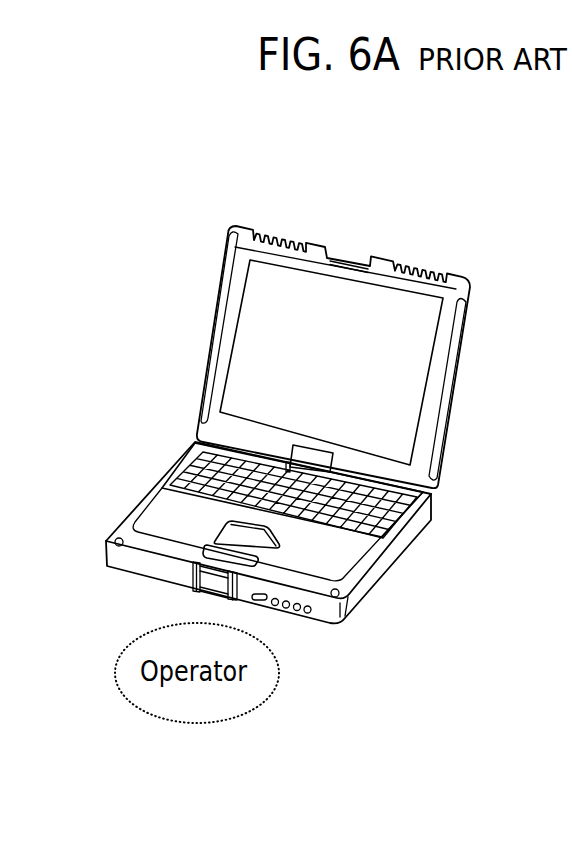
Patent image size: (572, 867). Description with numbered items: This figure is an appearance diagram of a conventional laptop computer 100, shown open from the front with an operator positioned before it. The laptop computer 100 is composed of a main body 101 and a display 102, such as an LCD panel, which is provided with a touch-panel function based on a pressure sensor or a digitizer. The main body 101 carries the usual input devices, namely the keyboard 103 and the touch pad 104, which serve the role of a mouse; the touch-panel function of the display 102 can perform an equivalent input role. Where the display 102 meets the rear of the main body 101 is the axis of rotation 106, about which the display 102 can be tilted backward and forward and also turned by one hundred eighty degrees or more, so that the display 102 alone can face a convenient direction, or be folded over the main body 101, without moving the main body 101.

The laptop computer 100 is at (417, 198).
The main body 101 is at (352, 600).
The display 102 is at (455, 291).
The keyboard 103 is at (372, 517).
The touch pad 104 is at (252, 538).
The axis of rotation 106 is at (320, 470).